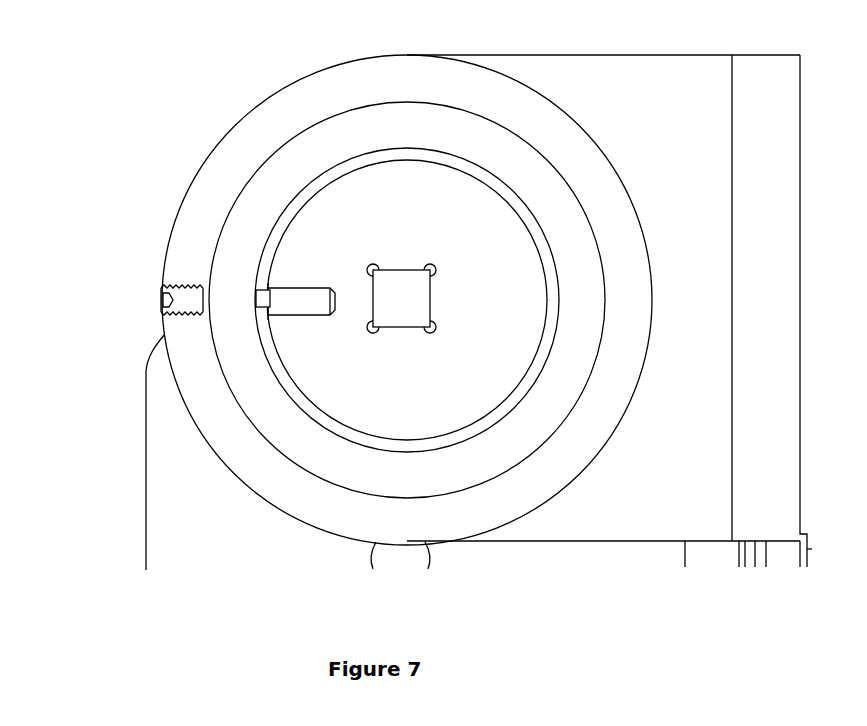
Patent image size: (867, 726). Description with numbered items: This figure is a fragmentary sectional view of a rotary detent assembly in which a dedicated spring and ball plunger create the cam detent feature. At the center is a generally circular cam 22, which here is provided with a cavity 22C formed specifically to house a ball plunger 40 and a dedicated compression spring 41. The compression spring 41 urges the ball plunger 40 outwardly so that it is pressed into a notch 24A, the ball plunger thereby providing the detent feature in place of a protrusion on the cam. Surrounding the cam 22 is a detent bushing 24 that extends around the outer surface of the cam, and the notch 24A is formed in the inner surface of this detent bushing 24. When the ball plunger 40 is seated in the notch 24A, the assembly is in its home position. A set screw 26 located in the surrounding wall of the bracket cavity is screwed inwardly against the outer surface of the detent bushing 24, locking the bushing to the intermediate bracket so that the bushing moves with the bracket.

The cam 22 is at (316, 224).
The cavity 22C is at (313, 321).
The detent bushing 24 is at (243, 241).
The notch 24A is at (236, 294).
The set screw 26 is at (142, 300).
The ball plunger 40 is at (260, 298).
The compression spring 41 is at (297, 298).